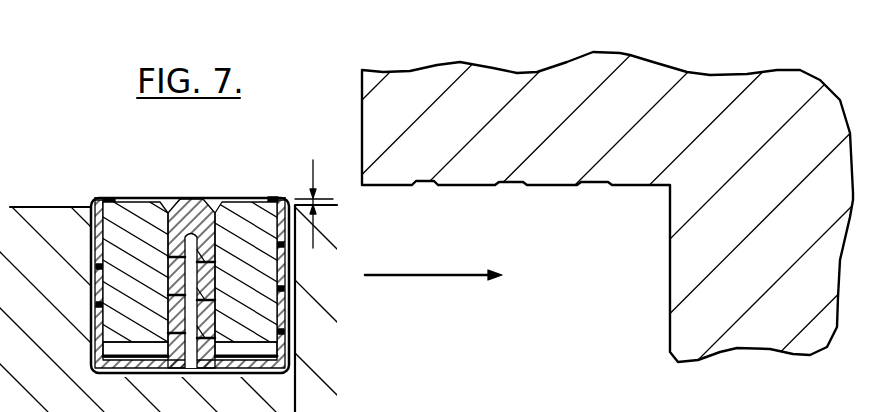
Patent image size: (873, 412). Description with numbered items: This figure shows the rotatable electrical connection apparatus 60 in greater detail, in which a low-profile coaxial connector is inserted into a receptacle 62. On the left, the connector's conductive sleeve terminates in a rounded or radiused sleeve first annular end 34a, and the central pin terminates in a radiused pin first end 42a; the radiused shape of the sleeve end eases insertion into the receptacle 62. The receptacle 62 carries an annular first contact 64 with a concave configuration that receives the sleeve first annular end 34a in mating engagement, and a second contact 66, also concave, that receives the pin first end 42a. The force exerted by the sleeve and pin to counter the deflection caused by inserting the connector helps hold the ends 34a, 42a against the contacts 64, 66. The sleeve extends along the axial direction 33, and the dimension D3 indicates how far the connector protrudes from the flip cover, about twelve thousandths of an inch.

The sleeve first annular end 34a is at (114, 200).
The pin first end 42a is at (190, 198).
The rotatable electrical connection apparatus 60 is at (322, 130).
The protrusion dimension D3 is at (337, 205).
The receptacle 62 is at (480, 207).
The second contact 66 is at (510, 184).
The annular first contact 64 is at (596, 184).
The axial direction 33 is at (533, 350).